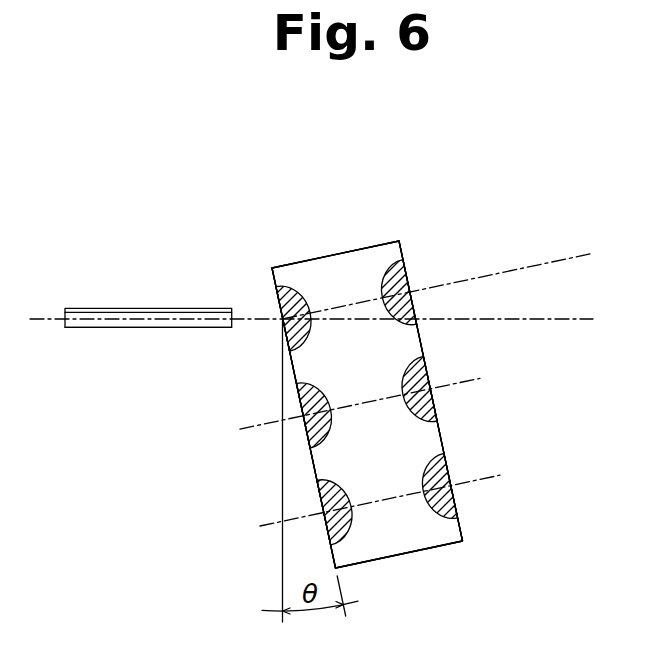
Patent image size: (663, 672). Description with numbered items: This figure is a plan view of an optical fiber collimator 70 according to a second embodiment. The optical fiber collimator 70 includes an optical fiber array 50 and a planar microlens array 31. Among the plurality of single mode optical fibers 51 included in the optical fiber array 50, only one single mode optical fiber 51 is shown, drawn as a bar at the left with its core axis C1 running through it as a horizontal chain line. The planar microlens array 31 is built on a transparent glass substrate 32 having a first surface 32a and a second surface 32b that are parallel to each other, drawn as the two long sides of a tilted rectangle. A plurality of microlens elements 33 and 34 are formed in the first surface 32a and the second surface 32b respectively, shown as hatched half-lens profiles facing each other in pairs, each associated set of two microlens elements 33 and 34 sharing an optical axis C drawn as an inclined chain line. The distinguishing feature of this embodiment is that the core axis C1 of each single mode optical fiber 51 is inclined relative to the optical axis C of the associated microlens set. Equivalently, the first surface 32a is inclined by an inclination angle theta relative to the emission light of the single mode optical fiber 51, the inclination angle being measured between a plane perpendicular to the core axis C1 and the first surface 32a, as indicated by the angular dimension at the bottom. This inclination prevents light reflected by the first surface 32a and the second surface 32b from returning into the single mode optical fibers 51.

The planar microlens array 31 is at (345, 243).
The transparent glass substrate 32 is at (305, 260).
The first surface 32a is at (273, 280).
The second surface 32b is at (402, 247).
The microlens element 33 is at (288, 337).
The microlens element 34 is at (407, 280).
The optical fiber array 50 is at (105, 305).
The single mode optical fiber 51 is at (148, 328).
The optical fiber collimator 70 is at (252, 250).
The optical axis C is at (537, 265).
The core axis C1 is at (532, 322).